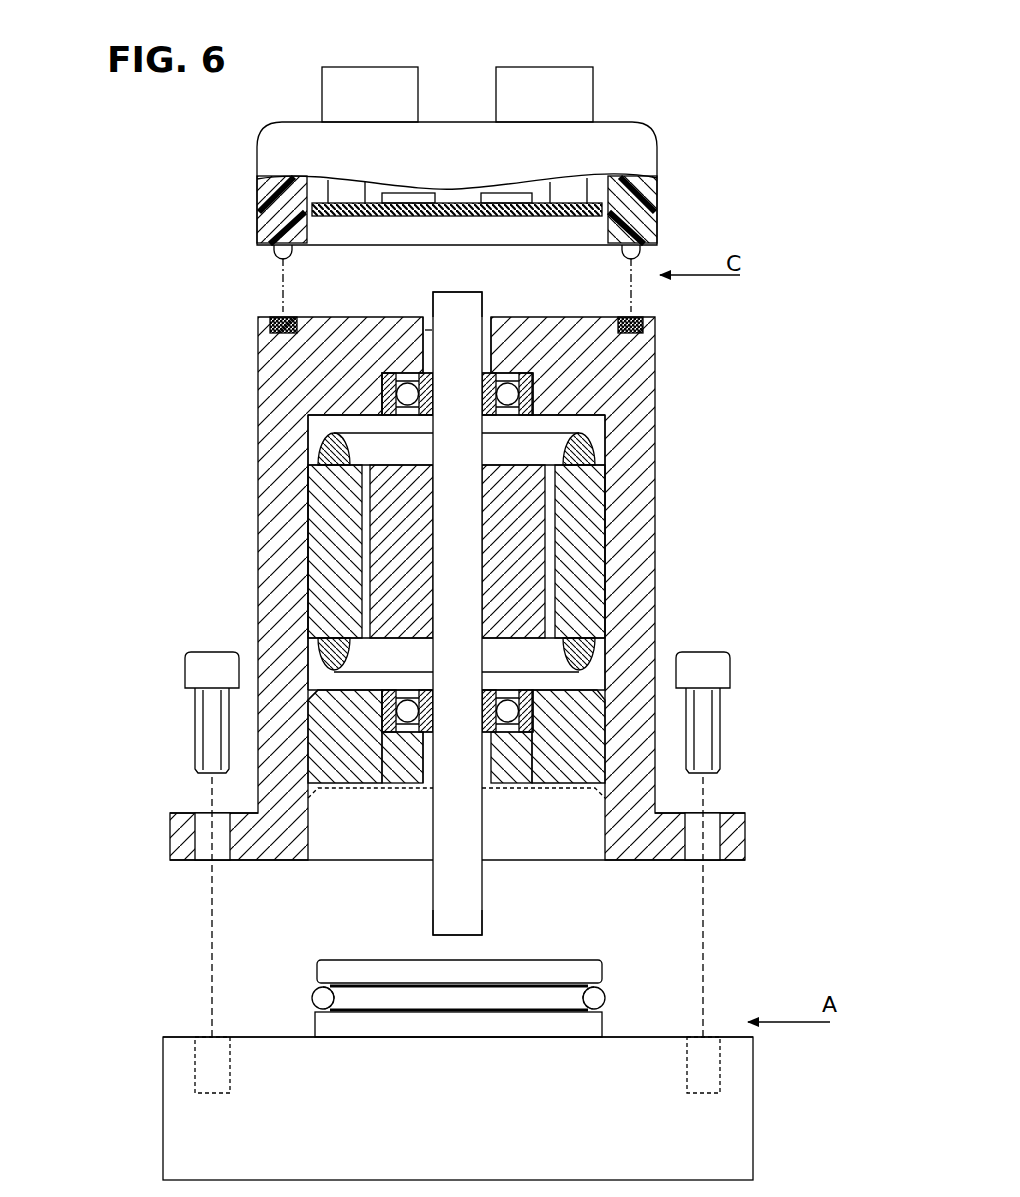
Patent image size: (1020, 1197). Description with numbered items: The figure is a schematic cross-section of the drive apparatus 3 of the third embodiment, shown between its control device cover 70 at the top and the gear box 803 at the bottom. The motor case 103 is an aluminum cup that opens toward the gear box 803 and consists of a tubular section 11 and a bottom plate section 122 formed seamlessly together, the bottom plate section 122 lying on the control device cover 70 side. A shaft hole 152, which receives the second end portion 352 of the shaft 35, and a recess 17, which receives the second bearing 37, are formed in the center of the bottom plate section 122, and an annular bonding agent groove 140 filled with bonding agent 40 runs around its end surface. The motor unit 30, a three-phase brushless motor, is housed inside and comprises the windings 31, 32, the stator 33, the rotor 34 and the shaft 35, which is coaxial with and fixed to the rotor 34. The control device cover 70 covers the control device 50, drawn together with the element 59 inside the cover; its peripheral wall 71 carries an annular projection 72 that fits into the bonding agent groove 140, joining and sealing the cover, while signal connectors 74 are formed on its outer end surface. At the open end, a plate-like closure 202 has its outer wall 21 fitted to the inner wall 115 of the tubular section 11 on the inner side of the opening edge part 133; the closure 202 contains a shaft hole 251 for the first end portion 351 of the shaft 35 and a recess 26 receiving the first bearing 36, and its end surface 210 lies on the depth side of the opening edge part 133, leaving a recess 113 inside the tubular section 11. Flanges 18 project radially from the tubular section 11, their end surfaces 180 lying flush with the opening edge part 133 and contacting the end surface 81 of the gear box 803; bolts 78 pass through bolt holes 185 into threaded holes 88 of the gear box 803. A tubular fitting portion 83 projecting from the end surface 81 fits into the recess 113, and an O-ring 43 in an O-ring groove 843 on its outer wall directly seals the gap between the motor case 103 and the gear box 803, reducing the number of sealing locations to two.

The drive apparatus 3 is at (642, 62).
The tubular section 11 is at (282, 519).
The recess 17 is at (383, 388).
The flange 18 is at (181, 810).
The outer wall 21 is at (306, 738).
The recess 26 is at (392, 720).
The motor unit 30 is at (745, 437).
The winding 31 is at (590, 449).
The winding 32 is at (579, 551).
The stator 33 is at (588, 480).
The rotor 34 is at (527, 510).
The shaft 35 is at (470, 540).
The first bearing 36 is at (530, 712).
The second bearing 37 is at (528, 393).
The bonding agent 40 is at (628, 316).
The O-ring 43 is at (606, 999).
The control device 50 is at (459, 190).
The circuit board 59 is at (648, 212).
The control device cover 70 is at (664, 132).
The peripheral wall 71 is at (265, 212).
The annular projection 72 is at (282, 256).
The signal connector 74 is at (343, 80).
The bolt 78 is at (211, 660).
The end surface 81 is at (653, 1035).
The fitting portion 83 is at (590, 955).
The threaded hole 88 is at (207, 1072).
The motor case 103 is at (640, 412).
The recess 113 is at (340, 846).
The inner wall 115 is at (340, 703).
The bottom plate section 122 is at (318, 382).
The opening edge part 133 is at (278, 862).
The bonding agent groove 140 is at (280, 316).
The shaft hole 152 is at (425, 330).
The end surface 180 is at (727, 862).
The bolt hole 185 is at (203, 848).
The closure 202 is at (568, 762).
The end surface 210 is at (510, 790).
The shaft hole 251 is at (430, 769).
The first end portion 351 is at (470, 921).
The second end portion 352 is at (469, 303).
The gear box 803 is at (730, 1143).
The O-ring groove 843 is at (312, 997).